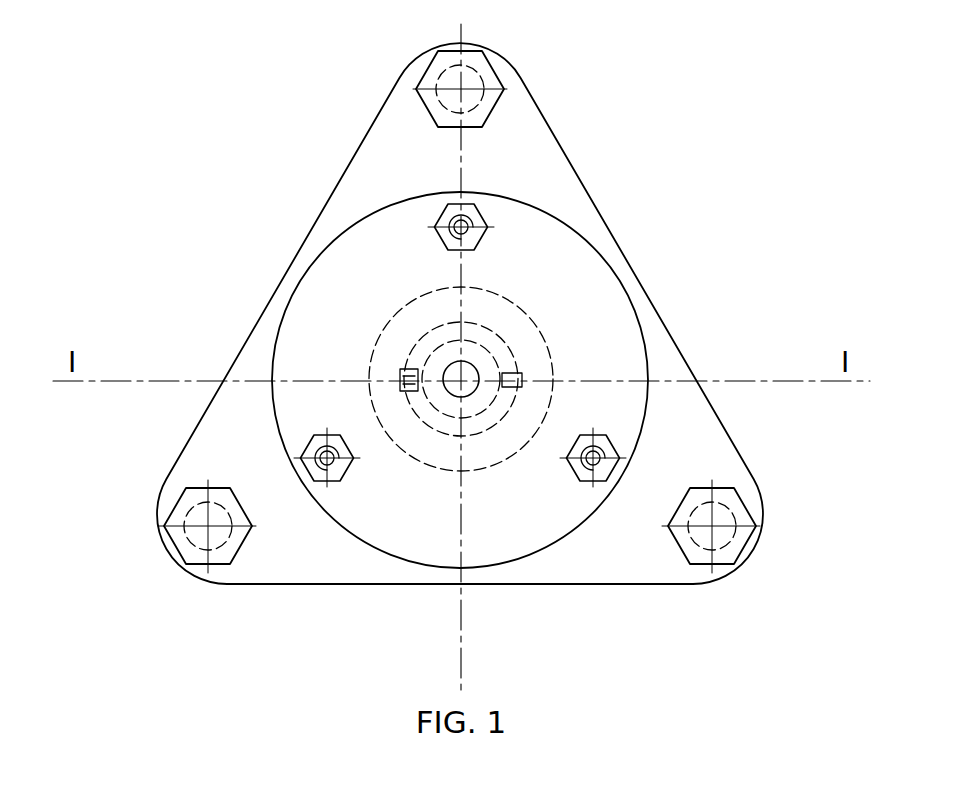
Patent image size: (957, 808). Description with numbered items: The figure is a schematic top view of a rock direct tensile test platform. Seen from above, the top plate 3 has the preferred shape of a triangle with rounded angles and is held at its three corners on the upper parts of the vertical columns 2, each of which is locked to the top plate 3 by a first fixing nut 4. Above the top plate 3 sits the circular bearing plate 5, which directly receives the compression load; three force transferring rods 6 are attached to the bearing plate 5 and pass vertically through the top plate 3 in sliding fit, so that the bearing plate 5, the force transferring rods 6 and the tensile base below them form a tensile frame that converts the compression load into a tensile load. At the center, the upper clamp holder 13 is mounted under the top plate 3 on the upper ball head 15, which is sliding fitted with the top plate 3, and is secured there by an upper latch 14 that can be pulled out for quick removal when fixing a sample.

The vertical column 2 is at (475, 67).
The top plate 3 is at (400, 75).
The first fixing nut 4 is at (504, 89).
The bearing plate 5 is at (478, 193).
The force transferring rod 6 is at (468, 235).
The upper clamp holder 13 is at (472, 368).
The upper latch 14 is at (403, 377).
The upper ball head 15 is at (500, 363).